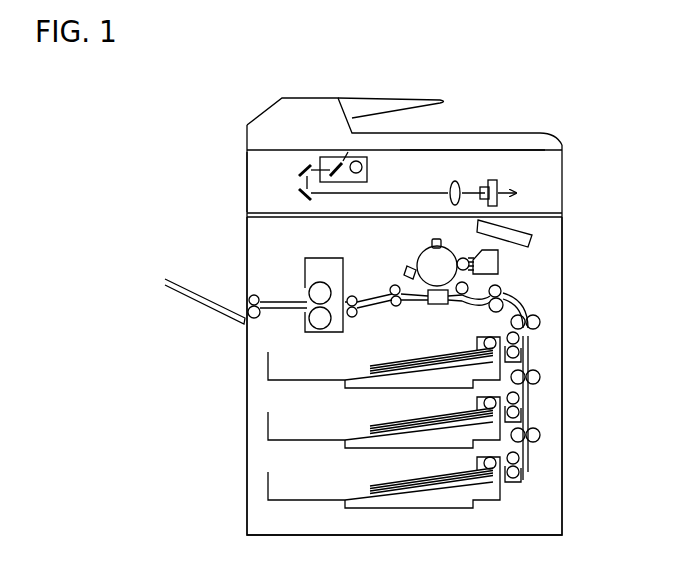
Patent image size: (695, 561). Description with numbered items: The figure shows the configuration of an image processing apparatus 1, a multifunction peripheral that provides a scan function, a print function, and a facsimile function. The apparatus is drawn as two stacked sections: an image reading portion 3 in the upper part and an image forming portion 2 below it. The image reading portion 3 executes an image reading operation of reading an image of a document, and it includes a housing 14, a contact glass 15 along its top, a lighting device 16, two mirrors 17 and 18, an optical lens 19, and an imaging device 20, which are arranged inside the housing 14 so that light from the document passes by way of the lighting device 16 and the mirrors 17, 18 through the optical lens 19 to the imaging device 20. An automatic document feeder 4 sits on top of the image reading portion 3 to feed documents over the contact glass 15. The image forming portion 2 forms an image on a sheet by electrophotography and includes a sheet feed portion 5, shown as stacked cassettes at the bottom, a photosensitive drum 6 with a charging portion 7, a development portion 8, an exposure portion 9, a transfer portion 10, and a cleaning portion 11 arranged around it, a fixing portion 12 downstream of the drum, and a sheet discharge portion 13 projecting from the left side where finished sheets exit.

The image processing apparatus 1 is at (229, 70).
The image forming portion 2 is at (587, 345).
The image reading portion 3 is at (587, 176).
The automatic document feeder 4 is at (322, 96).
The sheet feed portion 5 is at (255, 420).
The photosensitive drum 6 is at (424, 252).
The charging portion 7 is at (441, 240).
The development portion 8 is at (466, 257).
The exposure portion 9 is at (533, 240).
The transfer portion 10 is at (434, 305).
The cleaning portion 11 is at (406, 267).
The fixing portion 12 is at (325, 257).
The sheet discharge portion 13 is at (230, 288).
The housing 14 is at (247, 178).
The contact glass 15 is at (515, 157).
The lighting device 16 is at (370, 166).
The mirror 17 is at (298, 172).
The mirror 18 is at (298, 193).
The optical lens 19 is at (452, 182).
The imaging device 20 is at (488, 180).